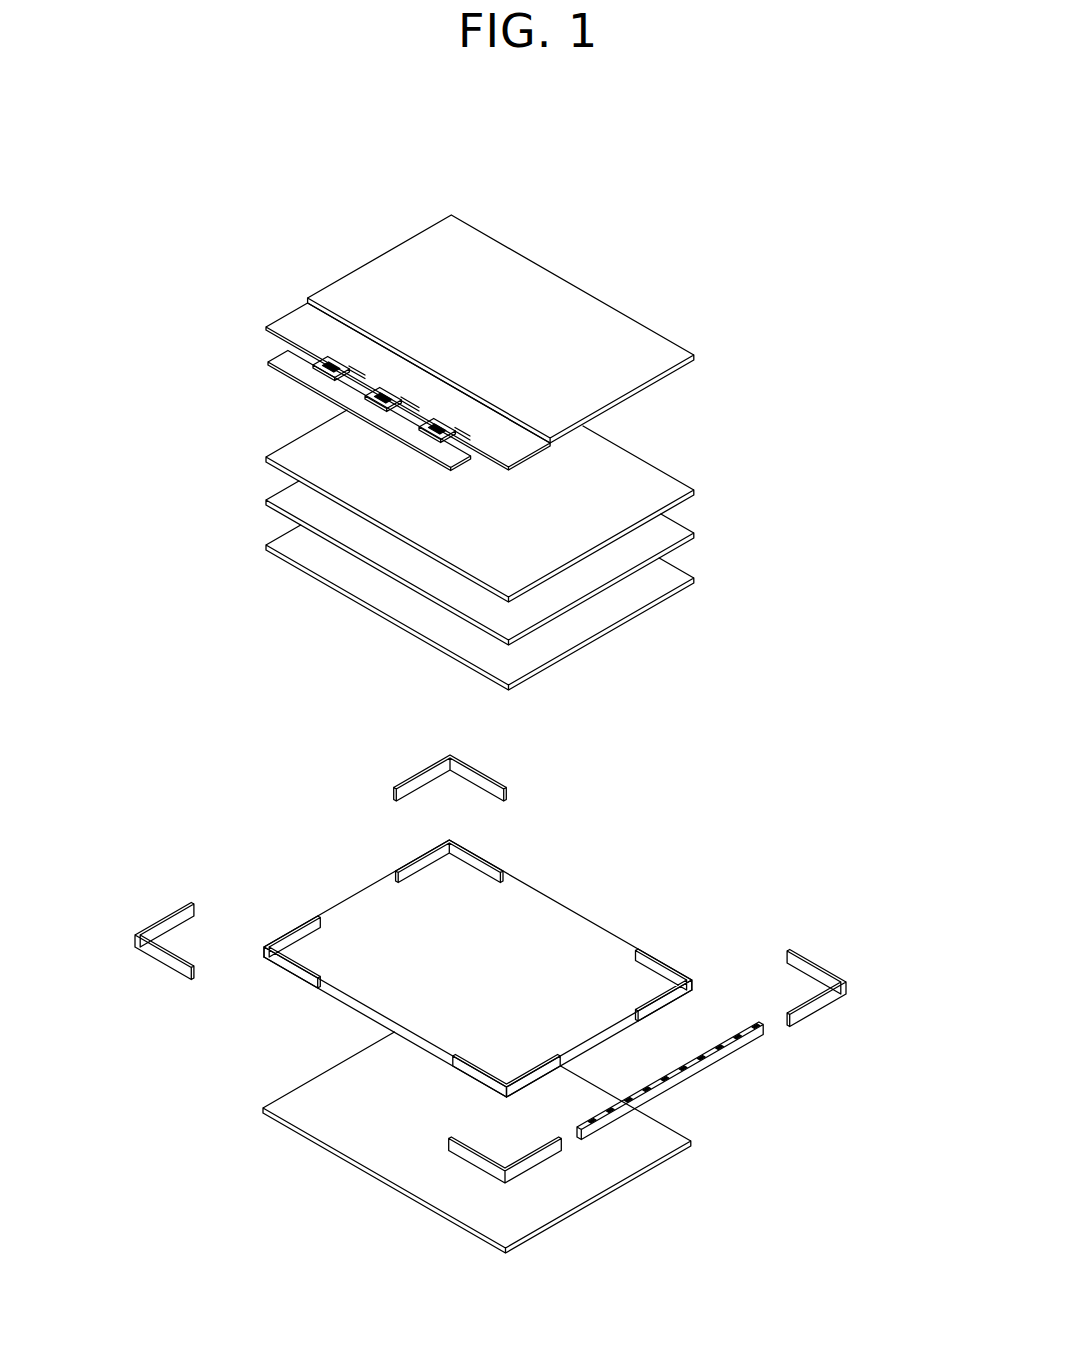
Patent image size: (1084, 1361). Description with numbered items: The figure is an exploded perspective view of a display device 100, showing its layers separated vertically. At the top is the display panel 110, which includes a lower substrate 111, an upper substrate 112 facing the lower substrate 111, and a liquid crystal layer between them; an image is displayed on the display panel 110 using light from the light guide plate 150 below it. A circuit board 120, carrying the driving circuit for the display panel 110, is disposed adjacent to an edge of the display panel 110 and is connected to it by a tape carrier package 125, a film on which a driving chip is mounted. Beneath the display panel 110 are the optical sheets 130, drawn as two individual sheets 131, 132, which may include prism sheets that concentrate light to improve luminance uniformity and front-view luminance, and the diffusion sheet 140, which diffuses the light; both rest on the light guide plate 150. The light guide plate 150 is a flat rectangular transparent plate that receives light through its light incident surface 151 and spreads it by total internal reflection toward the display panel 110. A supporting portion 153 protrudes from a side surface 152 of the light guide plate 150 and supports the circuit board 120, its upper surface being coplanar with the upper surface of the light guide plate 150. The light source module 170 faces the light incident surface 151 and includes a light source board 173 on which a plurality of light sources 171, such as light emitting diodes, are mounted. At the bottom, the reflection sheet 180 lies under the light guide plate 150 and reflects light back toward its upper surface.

The display device 100 is at (512, 140).
The display panel 110 is at (350, 229).
The lower substrate 111 is at (287, 313).
The upper substrate 112 is at (330, 297).
The circuit board 120 is at (282, 352).
The tape carrier package 125 is at (302, 369).
The optical sheets 130 is at (773, 473).
The first substrate 131 is at (696, 491).
The second substrate 132 is at (696, 536).
The diffusion sheet 140 is at (696, 582).
The light guide plate 150 is at (607, 948).
The light incident surface 151 is at (624, 1024).
The side surface 152 is at (473, 1070).
The supporting portion 153 is at (334, 1020).
The light source module 170 is at (830, 1027).
The light sources 171 is at (760, 1031).
The light source board 173 is at (740, 1048).
The reflection sheet 180 is at (680, 1143).